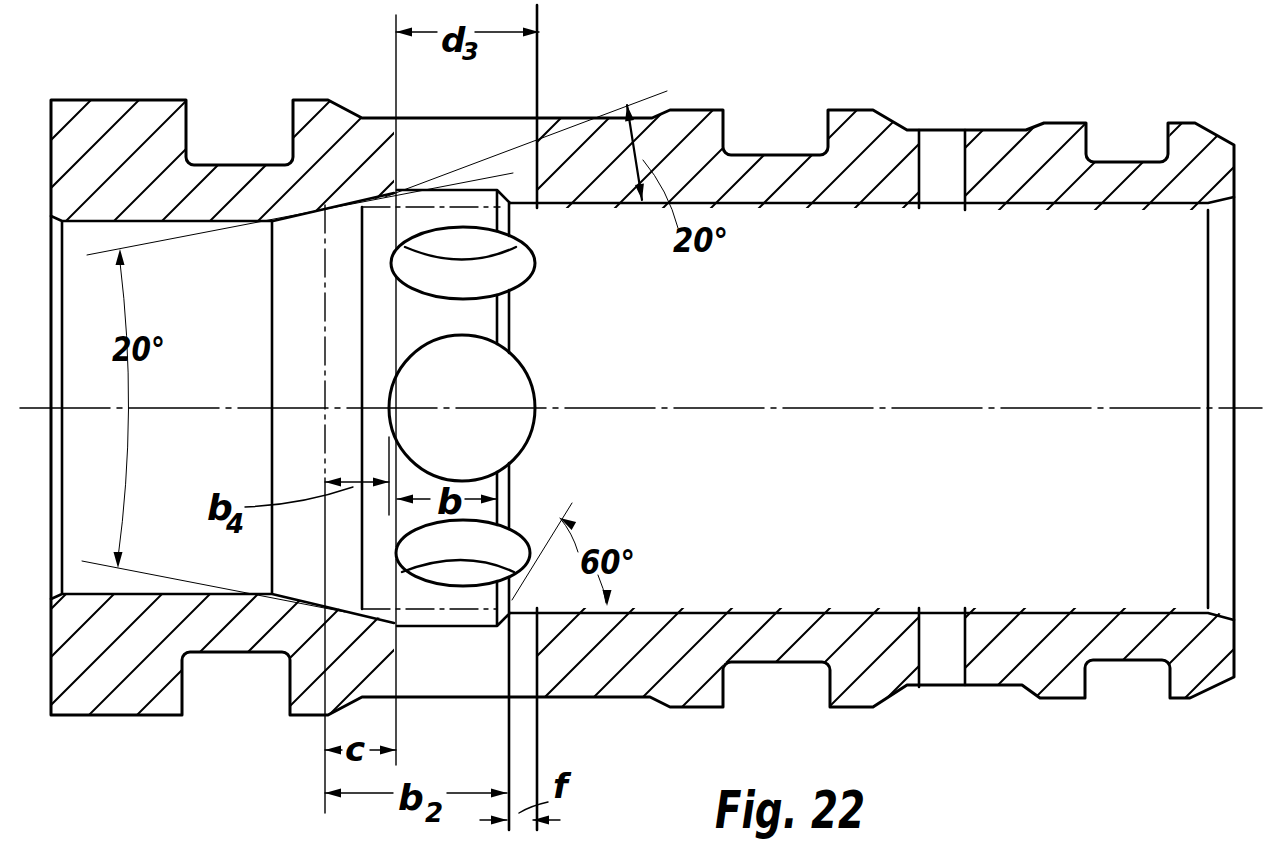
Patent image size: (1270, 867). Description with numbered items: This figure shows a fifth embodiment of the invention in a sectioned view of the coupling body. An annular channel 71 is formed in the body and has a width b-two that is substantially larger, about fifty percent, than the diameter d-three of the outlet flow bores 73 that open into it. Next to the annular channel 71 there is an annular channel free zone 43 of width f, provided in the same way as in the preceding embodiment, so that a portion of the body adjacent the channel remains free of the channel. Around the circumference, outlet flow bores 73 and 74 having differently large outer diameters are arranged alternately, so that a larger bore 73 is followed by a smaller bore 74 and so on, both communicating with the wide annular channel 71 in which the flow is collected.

The annular channel free zone 43 is at (519, 742).
The annular channel 71 is at (470, 612).
The outlet flow bore 73 is at (520, 378).
The outlet flow bore 74 is at (527, 540).